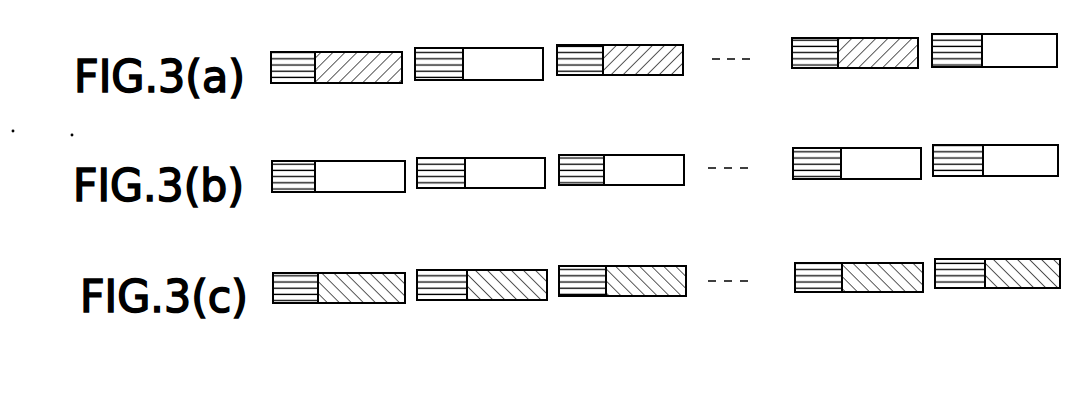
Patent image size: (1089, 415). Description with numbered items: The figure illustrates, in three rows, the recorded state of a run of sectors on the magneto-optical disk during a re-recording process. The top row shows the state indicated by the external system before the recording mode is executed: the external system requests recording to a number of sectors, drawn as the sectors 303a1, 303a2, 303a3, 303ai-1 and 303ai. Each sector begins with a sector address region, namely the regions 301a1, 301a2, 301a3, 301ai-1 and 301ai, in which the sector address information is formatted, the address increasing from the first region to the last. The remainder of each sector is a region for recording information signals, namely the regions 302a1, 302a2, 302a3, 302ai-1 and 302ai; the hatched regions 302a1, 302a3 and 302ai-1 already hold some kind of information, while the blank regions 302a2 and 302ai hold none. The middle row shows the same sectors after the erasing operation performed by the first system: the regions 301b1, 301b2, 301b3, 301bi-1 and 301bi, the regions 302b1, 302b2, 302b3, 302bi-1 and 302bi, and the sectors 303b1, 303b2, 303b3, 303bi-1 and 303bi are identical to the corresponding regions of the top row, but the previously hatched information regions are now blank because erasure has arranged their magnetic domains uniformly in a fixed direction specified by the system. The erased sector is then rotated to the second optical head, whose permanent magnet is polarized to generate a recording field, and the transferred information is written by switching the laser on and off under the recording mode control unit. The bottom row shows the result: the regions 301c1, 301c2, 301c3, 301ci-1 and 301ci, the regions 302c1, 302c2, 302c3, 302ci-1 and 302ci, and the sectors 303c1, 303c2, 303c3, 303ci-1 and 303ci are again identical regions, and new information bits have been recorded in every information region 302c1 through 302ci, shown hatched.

In FIG. 3A, the sector address region 301a1 is at (301, 84).
In FIG. 3A, the information signal recording region 302a1 is at (357, 84).
In FIG. 3A, the sector 303a1 is at (261, 119).
In FIG. 3A, the sector address region 301a2 is at (449, 81).
In FIG. 3A, the information signal recording region 302a2 is at (498, 81).
In FIG. 3A, the sector 303a2 is at (405, 115).
In FIG. 3A, the sector address region 301a3 is at (589, 76).
In FIG. 3A, the information signal recording region 302a3 is at (638, 76).
In FIG. 3A, the sector 303a3 is at (547, 111).
In FIG. 3A, the sector address region 301ai-1 is at (824, 69).
In FIG. 3A, the information signal recording region 302ai-1 is at (873, 69).
In FIG. 3A, the sector 303ai-1 is at (770, 105).
In FIG. 3A, the sector address region 301ai is at (968, 68).
In FIG. 3A, the information signal recording region 302ai is at (1012, 68).
In FIG. 3A, the sector 303ai is at (930, 103).
In FIG. 3B, the sector address region 301b1 is at (301, 193).
In FIG. 3B, the information signal recording region 302b1 is at (360, 193).
In FIG. 3B, the sector 303b1 is at (262, 230).
In FIG. 3B, the sector address region 301b2 is at (451, 189).
In FIG. 3B, the information signal recording region 302b2 is at (500, 189).
In FIG. 3B, the sector 303b2 is at (407, 227).
In FIG. 3B, the sector address region 301b3 is at (590, 186).
In FIG. 3B, the information signal recording region 302b3 is at (639, 186).
In FIG. 3B, the sector 303b3 is at (549, 225).
In FIG. 3B, the sector address region 301bi-1 is at (827, 180).
In FIG. 3B, the information signal recording region 302bi-1 is at (876, 180).
In FIG. 3B, the sector 303bi-1 is at (772, 219).
In FIG. 3B, the sector address region 301bi is at (969, 177).
In FIG. 3B, the information signal recording region 302bi is at (1013, 177).
In FIG. 3B, the sector 303bi is at (930, 217).
In FIG. 3C, the sector address region 301c1 is at (304, 304).
In FIG. 3C, the information signal recording region 302c1 is at (360, 304).
In FIG. 3C, the sector 303c1 is at (263, 350).
In FIG. 3C, the sector address region 301c2 is at (453, 301).
In FIG. 3C, the information signal recording region 302c2 is at (502, 301).
In FIG. 3C, the sector 303c2 is at (407, 347).
In FIG. 3C, the sector address region 301c3 is at (592, 297).
In FIG. 3C, the information signal recording region 302c3 is at (641, 297).
In FIG. 3C, the sector 303c3 is at (549, 345).
In FIG. 3C, the sector address region 301ci-1 is at (828, 293).
In FIG. 3C, the information signal recording region 302ci-1 is at (878, 293).
In FIG. 3C, the sector 303ci-1 is at (772, 340).
In FIG. 3C, the sector address region 301ci is at (971, 289).
In FIG. 3C, the information signal recording region 302ci is at (1015, 289).
In FIG. 3C, the sector 303ci is at (930, 338).